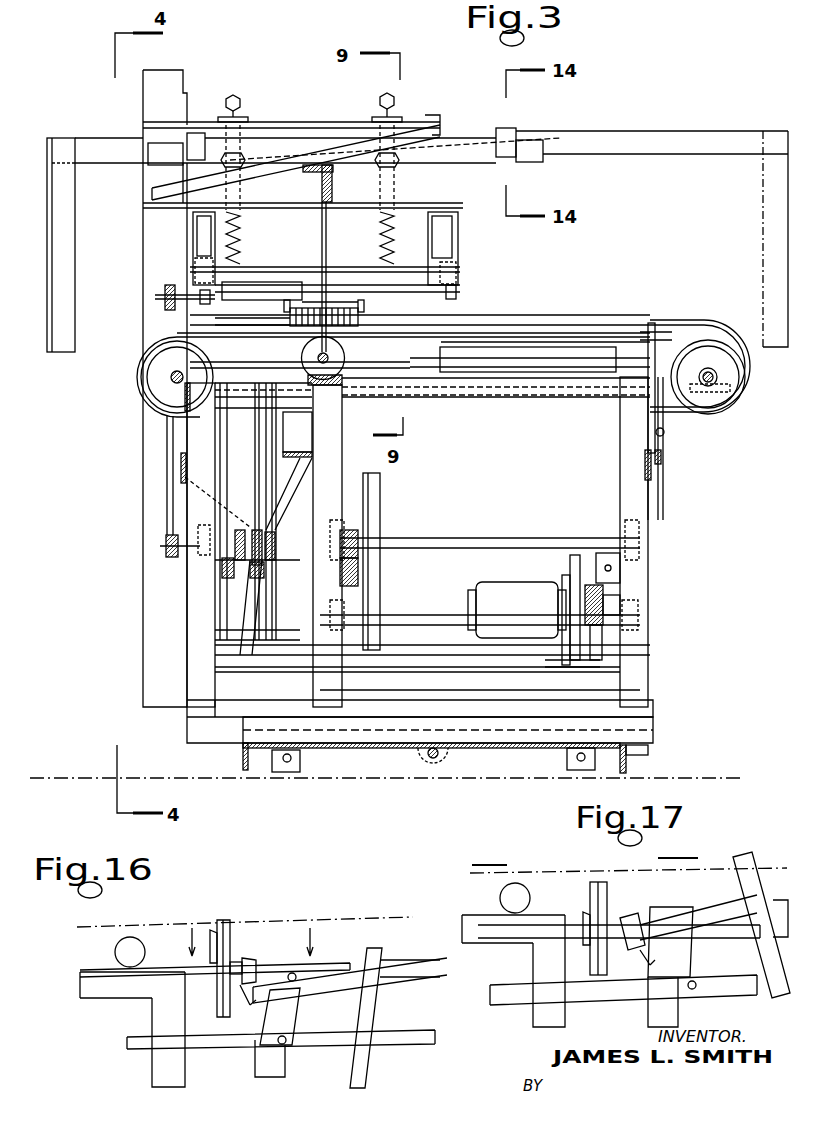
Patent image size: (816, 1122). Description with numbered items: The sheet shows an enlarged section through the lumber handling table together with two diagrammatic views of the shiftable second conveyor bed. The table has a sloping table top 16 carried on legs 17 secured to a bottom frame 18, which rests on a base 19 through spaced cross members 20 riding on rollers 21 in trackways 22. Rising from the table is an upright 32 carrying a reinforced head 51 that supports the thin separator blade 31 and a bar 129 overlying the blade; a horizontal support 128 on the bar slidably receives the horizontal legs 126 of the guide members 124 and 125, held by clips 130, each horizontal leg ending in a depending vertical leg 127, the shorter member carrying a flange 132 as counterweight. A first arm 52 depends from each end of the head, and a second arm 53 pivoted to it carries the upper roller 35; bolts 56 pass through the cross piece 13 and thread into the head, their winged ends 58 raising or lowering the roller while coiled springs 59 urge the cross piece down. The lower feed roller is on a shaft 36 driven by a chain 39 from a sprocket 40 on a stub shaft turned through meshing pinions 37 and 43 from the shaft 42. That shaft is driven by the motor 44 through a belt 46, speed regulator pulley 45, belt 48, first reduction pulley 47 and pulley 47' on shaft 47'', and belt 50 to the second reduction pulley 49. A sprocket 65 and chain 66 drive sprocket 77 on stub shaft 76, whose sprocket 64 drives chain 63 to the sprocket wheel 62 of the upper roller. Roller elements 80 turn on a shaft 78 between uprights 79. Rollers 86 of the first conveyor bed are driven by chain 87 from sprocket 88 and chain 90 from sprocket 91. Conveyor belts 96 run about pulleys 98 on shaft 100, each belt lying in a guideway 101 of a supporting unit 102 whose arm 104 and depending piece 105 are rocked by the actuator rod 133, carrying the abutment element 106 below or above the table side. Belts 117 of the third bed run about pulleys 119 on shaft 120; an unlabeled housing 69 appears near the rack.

In FIG. 3, the cross piece 13 is at (360, 268).
In FIG. 16, the table top 16 is at (108, 992).
In FIG. 17, the table top 16 is at (478, 922).
In FIG. 3, the legs 17 is at (200, 468).
In FIG. 16, the legs 17 is at (165, 1060).
In FIG. 17, the legs 17 is at (540, 1015).
In FIG. 3, the bottom frame 18 is at (480, 685).
In FIG. 3, the base 19 is at (242, 762).
In FIG. 3, the cross members 20 is at (648, 710).
In FIG. 3, the rollers 21 is at (302, 762).
In FIG. 3, the trackway 22 is at (640, 727).
In FIG. 3, the separator blade 31 is at (327, 232).
In FIG. 3, the upright 32 is at (170, 84).
In FIG. 3, the upper roller 35 is at (398, 272).
In FIG. 3, the shaft 36 is at (433, 760).
In FIG. 3, the pinion 37 is at (360, 572).
In FIG. 3, the chain 39 is at (228, 452).
In FIG. 3, the sprocket 40 is at (228, 580).
In FIG. 3, the shaft 42 is at (445, 545).
In FIG. 3, the pinion 43 is at (360, 540).
In FIG. 3, the motor 44 is at (240, 578).
In FIG. 3, the speed regulator pulley 45 is at (605, 598).
In FIG. 3, the belt 46 is at (580, 670).
In FIG. 3, the first reduction pulley 47 is at (545, 608).
In FIG. 3, the pulley 47' is at (480, 609).
In FIG. 3, the shaft 47'' is at (480, 674).
In FIG. 3, the belt 48 is at (572, 555).
In FIG. 3, the second reduction pulley 49 is at (380, 516).
In FIG. 3, the belt 50 is at (380, 478).
In FIG. 3, the reinforced head 51 is at (438, 128).
In FIG. 3, the first arm 52 is at (191, 243).
In FIG. 3, the second arm 53 is at (193, 275).
In FIG. 3, the bolts 56 is at (372, 108).
In FIG. 3, the winged end 58 is at (385, 98).
In FIG. 3, the coiled spring 59 is at (392, 238).
In FIG. 3, the sprocket wheel 62 is at (162, 300).
In FIG. 3, the chain 63 is at (166, 460).
In FIG. 3, the sprocket 64 is at (166, 546).
In FIG. 3, the sprocket 65 is at (254, 580).
In FIG. 3, the chain 66 is at (255, 560).
In FIG. 3, the housing 69 is at (280, 300).
In FIG. 3, the stub shaft 76 is at (220, 567).
In FIG. 3, the sprocket 77 is at (238, 528).
In FIG. 3, the shaft 78 is at (240, 328).
In FIG. 3, the uprights 79 is at (290, 310).
In FIG. 3, the roller elements 80 is at (335, 310).
In FIG. 3, the rollers 86 is at (555, 362).
In FIG. 16, the rollers 86 is at (128, 950).
In FIG. 17, the rollers 86 is at (515, 895).
In FIG. 3, the chain 87 is at (262, 446).
In FIG. 3, the sprocket 88 is at (264, 528).
In FIG. 3, the chain 90 is at (278, 472).
In FIG. 3, the sprocket 91 is at (276, 545).
In FIG. 3, the conveyor belts 96 is at (668, 322).
In FIG. 16, the conveyor belts 96 is at (224, 922).
In FIG. 17, the conveyor belts 96 is at (600, 884).
In FIG. 3, the pulley 98 is at (718, 352).
In FIG. 16, the pulley 98 is at (242, 952).
In FIG. 17, the pulley 98 is at (612, 910).
In FIG. 3, the shaft 100 is at (717, 379).
In FIG. 16, the shaft 100 is at (100, 970).
In FIG. 17, the shaft 100 is at (518, 940).
In FIG. 16, the guideway 101 is at (210, 932).
In FIG. 17, the guideway 101 is at (583, 915).
In FIG. 3, the supporting unit 102 is at (548, 398).
In FIG. 16, the arm 104 is at (325, 975).
In FIG. 17, the arm 104 is at (722, 912).
In FIG. 3, the depending piece 105 is at (660, 433).
In FIG. 16, the depending piece 105 is at (288, 1022).
In FIG. 17, the depending piece 105 is at (690, 962).
In FIG. 3, the abutment element 106 is at (651, 478).
In FIG. 16, the abutment element 106 is at (378, 955).
In FIG. 17, the abutment element 106 is at (745, 862).
In FIG. 3, the belts 117 is at (150, 352).
In FIG. 3, the pulley 119 is at (148, 387).
In FIG. 3, the shaft 120 is at (170, 384).
In FIG. 3, the guide member 124 is at (648, 130).
In FIG. 3, the guide member 125 is at (66, 134).
In FIG. 3, the horizontal leg 126 is at (112, 150).
In FIG. 3, the vertical leg 127 is at (60, 275).
In FIG. 3, the horizontal support 128 is at (527, 160).
In FIG. 3, the bar 129 is at (320, 188).
In FIG. 3, the clips 130 is at (197, 140).
In FIG. 3, the flange 132 is at (49, 250).
In FIG. 3, the actuator rod 133 is at (661, 460).
In FIG. 16, the actuator rod 133 is at (328, 1046).
In FIG. 17, the actuator rod 133 is at (610, 995).